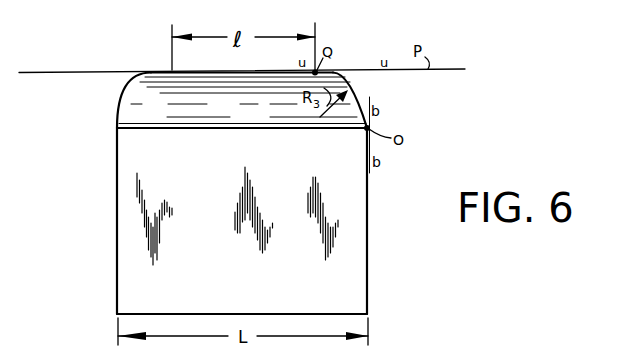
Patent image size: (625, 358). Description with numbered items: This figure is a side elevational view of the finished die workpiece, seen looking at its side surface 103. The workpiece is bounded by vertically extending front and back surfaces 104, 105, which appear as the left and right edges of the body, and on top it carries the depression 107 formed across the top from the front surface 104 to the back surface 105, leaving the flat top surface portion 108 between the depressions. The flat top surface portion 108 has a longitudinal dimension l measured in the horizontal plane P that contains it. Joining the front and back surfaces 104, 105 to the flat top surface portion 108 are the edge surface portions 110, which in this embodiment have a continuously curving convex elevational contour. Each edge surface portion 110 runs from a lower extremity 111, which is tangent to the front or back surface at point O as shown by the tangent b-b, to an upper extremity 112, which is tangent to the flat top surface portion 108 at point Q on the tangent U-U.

The side surface 103 is at (353, 253).
The front surface 104 is at (369, 216).
The back surface 105 is at (117, 204).
The depression 107 is at (162, 105).
The flat top surface portion 108 is at (256, 70).
The edge surface portion 110 is at (360, 98).
The lower extremity 111 is at (371, 124).
The upper extremity 112 is at (325, 72).